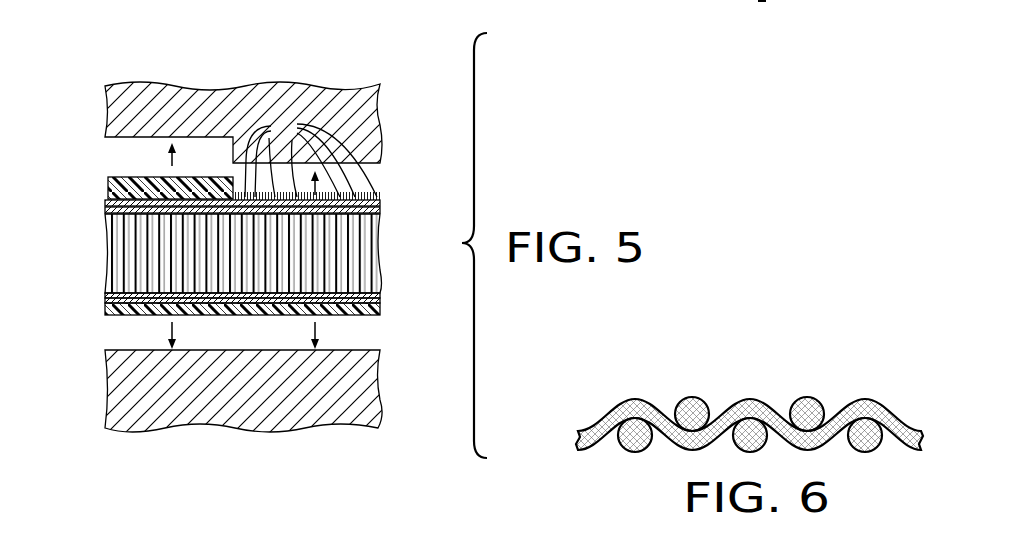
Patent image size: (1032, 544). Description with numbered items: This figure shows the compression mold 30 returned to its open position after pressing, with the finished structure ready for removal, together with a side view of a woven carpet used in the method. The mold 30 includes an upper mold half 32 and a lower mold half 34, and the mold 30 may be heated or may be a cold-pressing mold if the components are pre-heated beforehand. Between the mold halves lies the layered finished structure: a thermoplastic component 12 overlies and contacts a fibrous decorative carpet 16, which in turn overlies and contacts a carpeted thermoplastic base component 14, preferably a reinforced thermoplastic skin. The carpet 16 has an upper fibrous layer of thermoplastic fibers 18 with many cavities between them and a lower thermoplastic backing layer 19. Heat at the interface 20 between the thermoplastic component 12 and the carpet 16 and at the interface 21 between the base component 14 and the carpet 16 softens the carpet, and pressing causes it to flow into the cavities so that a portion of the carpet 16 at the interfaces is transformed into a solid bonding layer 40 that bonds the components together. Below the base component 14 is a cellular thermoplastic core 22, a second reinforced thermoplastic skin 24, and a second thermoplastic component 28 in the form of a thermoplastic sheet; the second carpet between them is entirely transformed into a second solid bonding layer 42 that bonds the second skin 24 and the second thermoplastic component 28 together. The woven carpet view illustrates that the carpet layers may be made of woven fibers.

The thermoplastic component 12 is at (101, 197).
The carpeted thermoplastic base component 14 is at (101, 211).
The fibrous decorative carpet 16 is at (386, 194).
The thermoplastic fibers 18 is at (311, 157).
The lower thermoplastic backing layer 19 is at (362, 214).
The interface 20 is at (108, 176).
The interface 21 is at (185, 198).
The cellular thermoplastic core 22 is at (380, 253).
The second reinforced thermoplastic skin 24 is at (381, 297).
The second thermoplastic component 28 is at (381, 313).
The compression mold 30 is at (400, 107).
The upper mold half 32 is at (205, 85).
The lower mold half 34 is at (378, 400).
The solid bonding layer 40 is at (103, 203).
The second solid bonding layer 42 is at (103, 304).